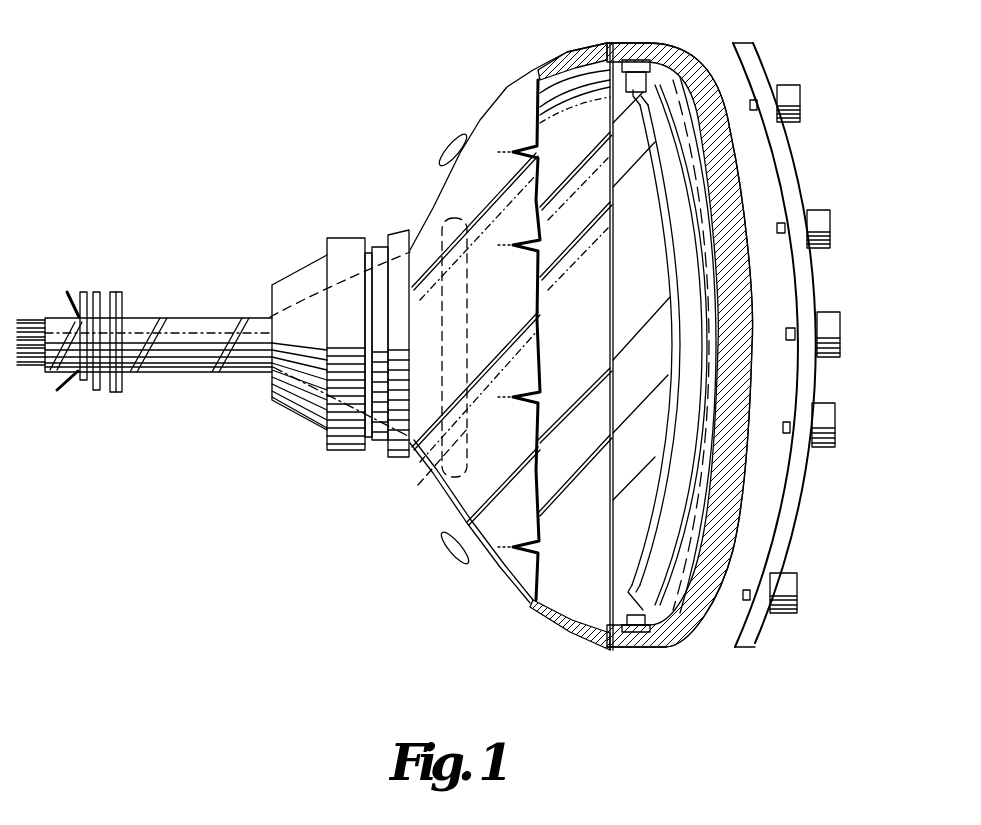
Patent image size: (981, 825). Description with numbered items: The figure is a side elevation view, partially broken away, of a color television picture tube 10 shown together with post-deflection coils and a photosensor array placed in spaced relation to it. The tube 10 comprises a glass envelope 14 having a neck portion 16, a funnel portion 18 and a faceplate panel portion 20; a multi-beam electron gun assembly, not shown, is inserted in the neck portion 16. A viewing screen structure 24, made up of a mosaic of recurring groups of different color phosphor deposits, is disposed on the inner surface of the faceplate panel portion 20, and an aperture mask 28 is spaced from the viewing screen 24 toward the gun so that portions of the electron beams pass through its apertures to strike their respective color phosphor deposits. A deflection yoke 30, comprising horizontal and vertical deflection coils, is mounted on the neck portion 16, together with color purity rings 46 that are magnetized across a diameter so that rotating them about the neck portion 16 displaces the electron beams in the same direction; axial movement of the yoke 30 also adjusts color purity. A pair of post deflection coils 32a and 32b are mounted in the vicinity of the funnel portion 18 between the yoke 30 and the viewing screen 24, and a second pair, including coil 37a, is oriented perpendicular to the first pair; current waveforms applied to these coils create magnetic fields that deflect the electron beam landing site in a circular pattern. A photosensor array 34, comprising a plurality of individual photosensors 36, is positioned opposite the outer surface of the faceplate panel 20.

The television tube 10 is at (709, 58).
The glass envelope 14 is at (563, 66).
The neck portion 16 is at (150, 320).
The funnel portion 18 is at (427, 240).
The faceplate panel portion 20 is at (677, 635).
The viewing screen structure 24 is at (693, 117).
The aperture mask 28 is at (667, 593).
The deflection yoke 30 is at (328, 450).
The post deflection coil 32a is at (457, 138).
The post deflection coil 32b is at (451, 562).
The photosensor array 34 is at (743, 650).
The photosensor 36 is at (800, 112).
The post deflection coil 37a is at (463, 515).
The color purity rings 46 is at (95, 292).